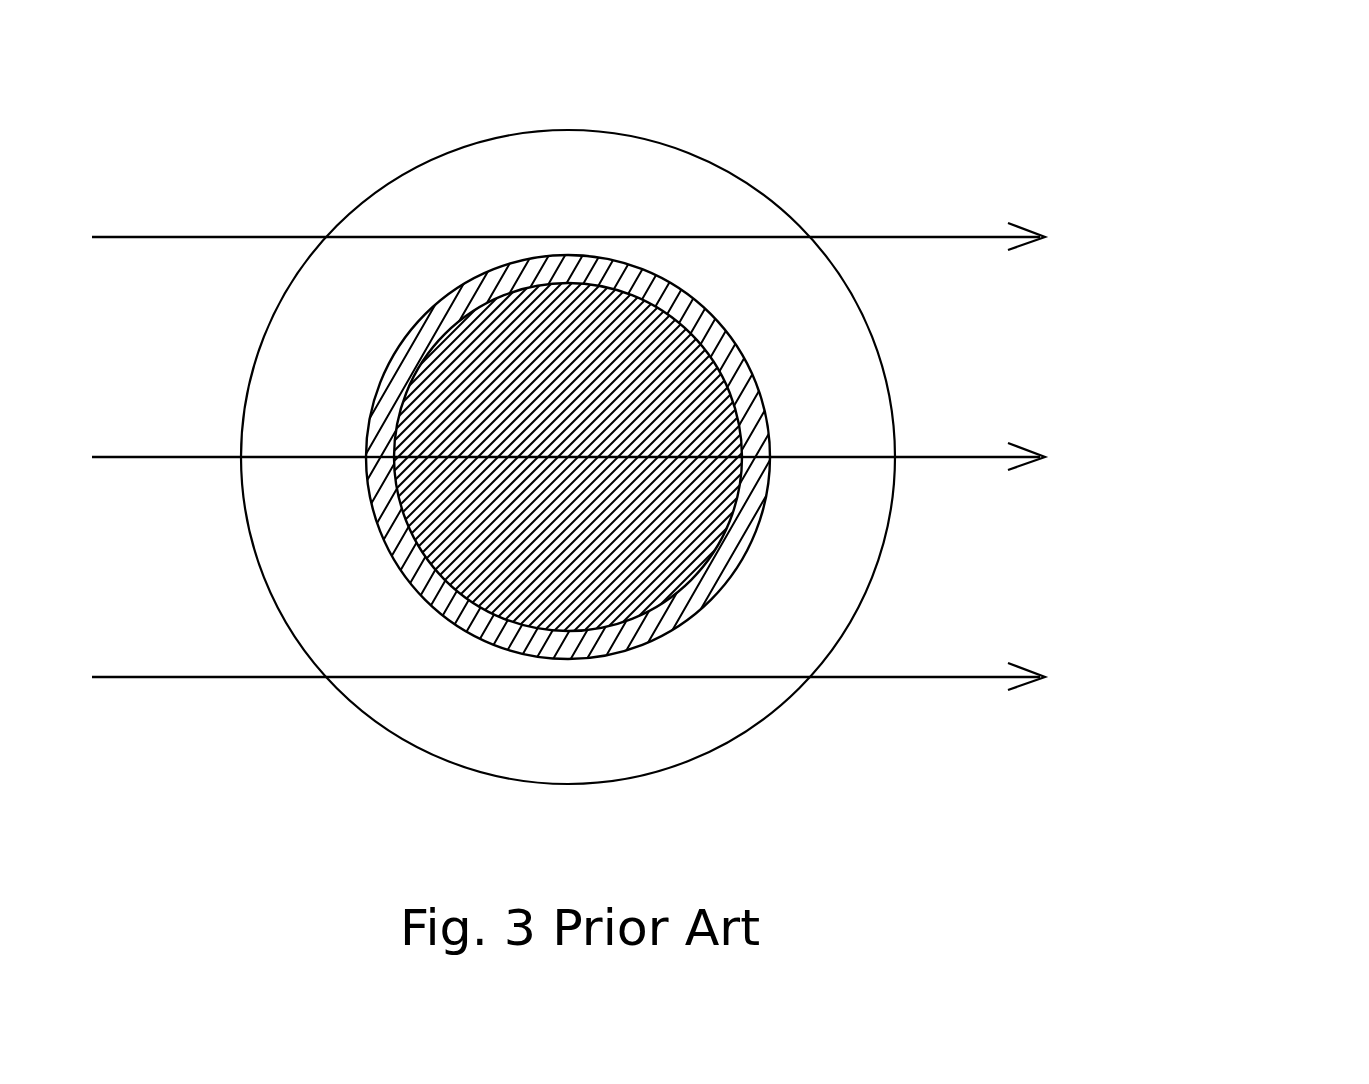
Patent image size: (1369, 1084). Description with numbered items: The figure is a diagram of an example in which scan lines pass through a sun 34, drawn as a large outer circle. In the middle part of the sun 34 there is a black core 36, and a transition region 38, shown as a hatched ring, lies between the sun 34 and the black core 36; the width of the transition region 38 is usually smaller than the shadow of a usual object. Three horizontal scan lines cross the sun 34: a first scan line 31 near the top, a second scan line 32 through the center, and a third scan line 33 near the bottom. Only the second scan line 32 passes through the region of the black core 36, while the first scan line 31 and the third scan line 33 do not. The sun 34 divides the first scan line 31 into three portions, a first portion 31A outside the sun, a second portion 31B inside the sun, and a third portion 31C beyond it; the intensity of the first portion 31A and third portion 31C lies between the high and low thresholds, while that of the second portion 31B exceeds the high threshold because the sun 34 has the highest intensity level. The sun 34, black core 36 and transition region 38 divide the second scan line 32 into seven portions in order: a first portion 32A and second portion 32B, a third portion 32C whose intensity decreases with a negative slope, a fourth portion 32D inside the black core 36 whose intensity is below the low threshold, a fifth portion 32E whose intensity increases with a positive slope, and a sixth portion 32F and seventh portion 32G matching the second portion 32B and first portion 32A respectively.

The first scan line 31 is at (703, 224).
The second scan line 32 is at (713, 417).
The third scan line 33 is at (708, 674).
The sun 34 is at (565, 130).
The black core 36 is at (570, 632).
The transition region 38 is at (710, 600).
The first portion 31A is at (167, 218).
The second portion 31B is at (568, 218).
The third portion 31C is at (967, 218).
The first portion 32A is at (167, 440).
The second portion 32B is at (304, 440).
The third portion 32C is at (381, 458).
The fourth portion 32D is at (568, 440).
The fifth portion 32E is at (754, 458).
The sixth portion 32F is at (832, 440).
The seventh portion 32G is at (967, 440).